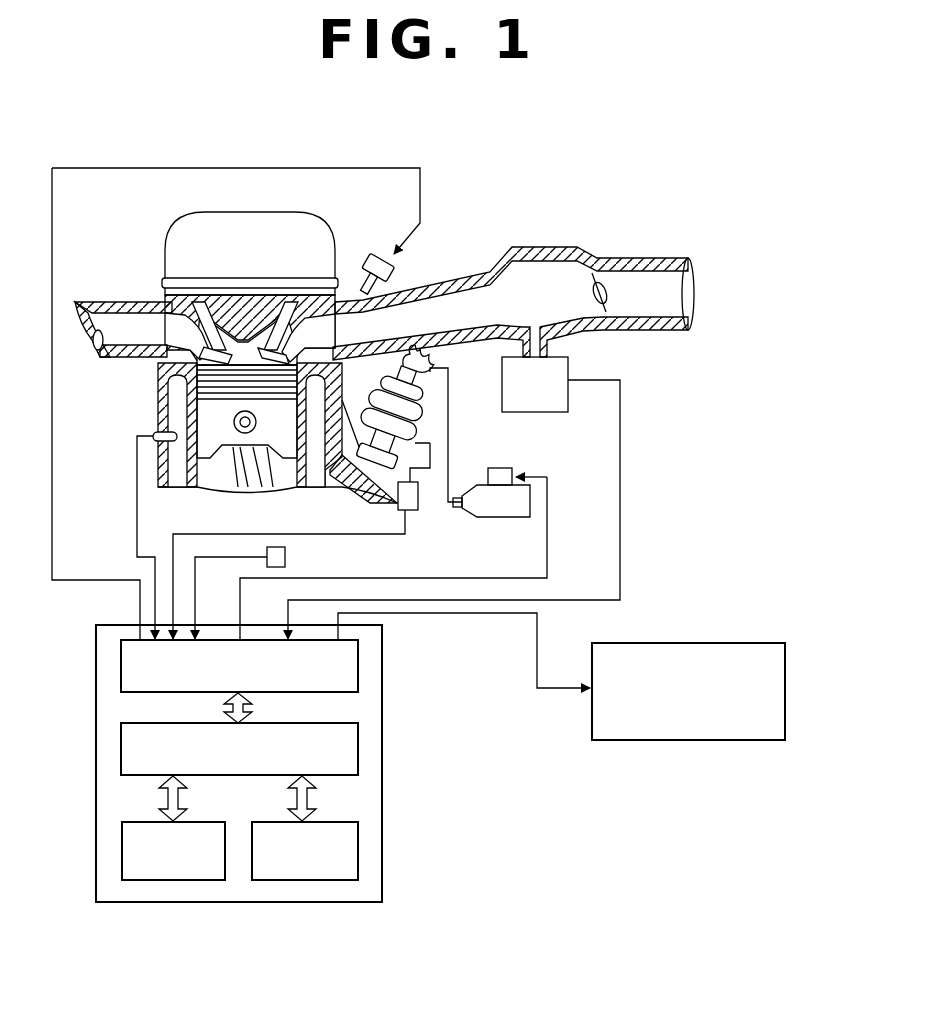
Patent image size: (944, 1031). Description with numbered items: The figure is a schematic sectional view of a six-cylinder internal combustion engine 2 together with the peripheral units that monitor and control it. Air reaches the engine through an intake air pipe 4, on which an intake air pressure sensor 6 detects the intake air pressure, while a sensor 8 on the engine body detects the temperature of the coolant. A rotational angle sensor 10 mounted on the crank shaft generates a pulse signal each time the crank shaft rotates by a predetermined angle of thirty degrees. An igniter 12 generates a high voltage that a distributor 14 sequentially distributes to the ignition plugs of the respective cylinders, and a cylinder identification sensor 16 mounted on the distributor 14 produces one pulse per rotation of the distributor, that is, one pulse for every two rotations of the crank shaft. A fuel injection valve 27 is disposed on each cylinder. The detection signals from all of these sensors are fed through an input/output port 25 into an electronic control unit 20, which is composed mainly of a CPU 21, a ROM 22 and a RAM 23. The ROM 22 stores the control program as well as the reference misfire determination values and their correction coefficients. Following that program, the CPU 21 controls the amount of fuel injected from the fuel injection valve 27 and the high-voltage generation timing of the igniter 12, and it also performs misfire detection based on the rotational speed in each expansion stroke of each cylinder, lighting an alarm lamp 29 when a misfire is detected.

The internal combustion engine 2 is at (165, 252).
The intake air pipe 4 is at (500, 300).
The intake air pressure sensor 6 is at (545, 372).
The coolant temperature sensor 8 is at (153, 436).
The rotational angle sensor 10 is at (285, 557).
The igniter 12 is at (496, 517).
The distributor 14 is at (430, 420).
The cylinder identification sensor 16 is at (398, 497).
The electronic control unit 20 is at (244, 763).
The CPU 21 is at (358, 762).
The ROM 22 is at (122, 853).
The RAM 23 is at (358, 852).
The input/output port 25 is at (358, 660).
The fuel injection valve 27 is at (386, 276).
The alarm lamp 29 is at (658, 643).